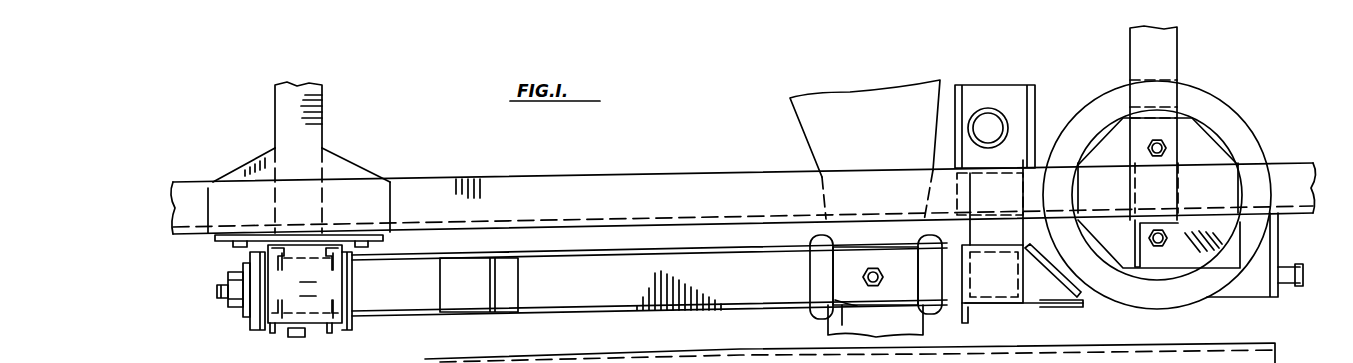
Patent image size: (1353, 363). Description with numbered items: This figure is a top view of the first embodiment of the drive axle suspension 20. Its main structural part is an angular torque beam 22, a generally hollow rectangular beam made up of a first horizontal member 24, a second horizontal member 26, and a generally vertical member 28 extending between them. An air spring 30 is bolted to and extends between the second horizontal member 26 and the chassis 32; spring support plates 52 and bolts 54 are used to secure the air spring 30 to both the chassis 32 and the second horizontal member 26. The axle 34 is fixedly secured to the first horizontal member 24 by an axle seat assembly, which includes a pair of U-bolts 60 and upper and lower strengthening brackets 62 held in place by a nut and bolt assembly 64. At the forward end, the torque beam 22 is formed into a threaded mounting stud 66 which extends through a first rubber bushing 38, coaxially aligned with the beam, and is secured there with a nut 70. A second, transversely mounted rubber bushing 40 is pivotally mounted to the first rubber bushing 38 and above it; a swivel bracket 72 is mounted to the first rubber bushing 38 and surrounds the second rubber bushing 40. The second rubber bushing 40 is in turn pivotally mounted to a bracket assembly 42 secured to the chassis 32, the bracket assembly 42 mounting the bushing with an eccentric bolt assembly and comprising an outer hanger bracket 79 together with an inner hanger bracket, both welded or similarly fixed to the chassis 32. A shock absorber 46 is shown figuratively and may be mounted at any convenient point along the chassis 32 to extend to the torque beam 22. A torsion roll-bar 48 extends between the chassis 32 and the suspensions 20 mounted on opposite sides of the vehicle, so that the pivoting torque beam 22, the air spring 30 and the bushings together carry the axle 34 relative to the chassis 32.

The drive axle suspension 20 is at (674, 161).
The torque beam 22 is at (684, 314).
The first horizontal member 24 is at (572, 303).
The second horizontal member 26 is at (1254, 299).
The vertical member 28 is at (1030, 287).
The air spring 30 is at (1237, 119).
The chassis 32 is at (446, 178).
The axle 34 is at (922, 330).
The first rubber bushing 38 is at (246, 326).
The second rubber bushing 40 is at (313, 337).
The bracket assembly 42 is at (342, 298).
The shock absorber 46 is at (983, 110).
The torsion roll-bar 48 is at (1291, 266).
The spring support plates 52 is at (1177, 264).
The bolts 54 is at (1168, 231).
The U-bolts 60 is at (923, 290).
The strengthening brackets 62 is at (844, 283).
The nut and bolt assembly 64 is at (875, 266).
The threaded mounting stud 66 is at (219, 289).
The nut 70 is at (236, 274).
The swivel bracket 72 is at (268, 341).
The outer hanger bracket 79 is at (308, 283).